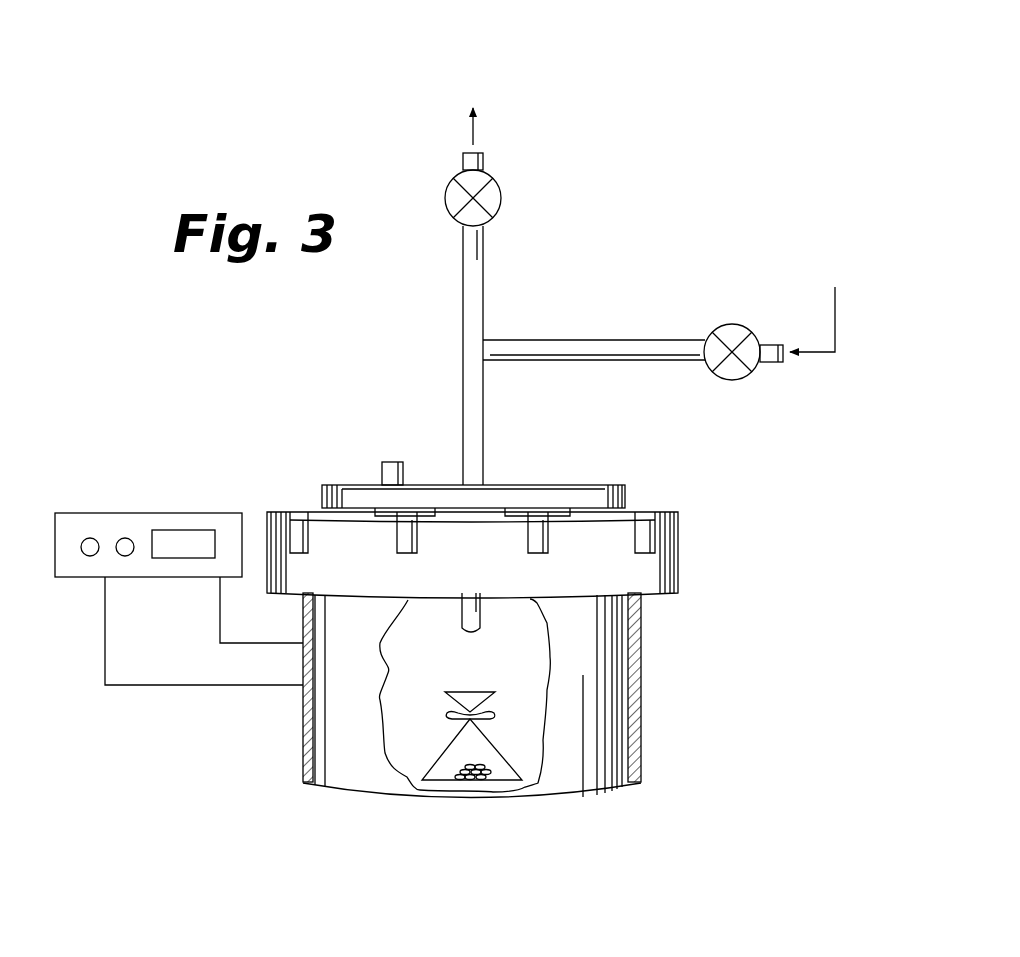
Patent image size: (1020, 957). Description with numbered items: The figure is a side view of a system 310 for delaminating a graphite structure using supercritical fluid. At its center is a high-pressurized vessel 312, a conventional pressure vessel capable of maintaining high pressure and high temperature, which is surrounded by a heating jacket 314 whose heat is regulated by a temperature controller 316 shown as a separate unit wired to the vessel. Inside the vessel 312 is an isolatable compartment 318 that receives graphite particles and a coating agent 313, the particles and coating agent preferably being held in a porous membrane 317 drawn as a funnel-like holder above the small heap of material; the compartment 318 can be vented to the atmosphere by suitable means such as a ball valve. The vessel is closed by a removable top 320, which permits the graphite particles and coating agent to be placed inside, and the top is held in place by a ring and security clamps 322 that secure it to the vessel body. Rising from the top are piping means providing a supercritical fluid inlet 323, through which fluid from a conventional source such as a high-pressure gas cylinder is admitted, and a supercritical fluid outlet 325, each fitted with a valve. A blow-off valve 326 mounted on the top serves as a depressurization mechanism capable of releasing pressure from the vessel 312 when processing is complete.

The system 310 is at (137, 357).
The high-pressurized vessel 312 is at (645, 655).
The coating agent 313 is at (477, 763).
The heating jacket 314 is at (637, 705).
The temperature controller 316 is at (128, 512).
The porous membrane 317 is at (448, 746).
The isolatable compartment 318 is at (417, 707).
The removable top 320 is at (682, 558).
The ring and security clamps 322 is at (298, 520).
The supercritical fluid inlet 323 is at (833, 273).
The supercritical fluid outlet 325 is at (475, 82).
The blow-off valve 326 is at (391, 460).